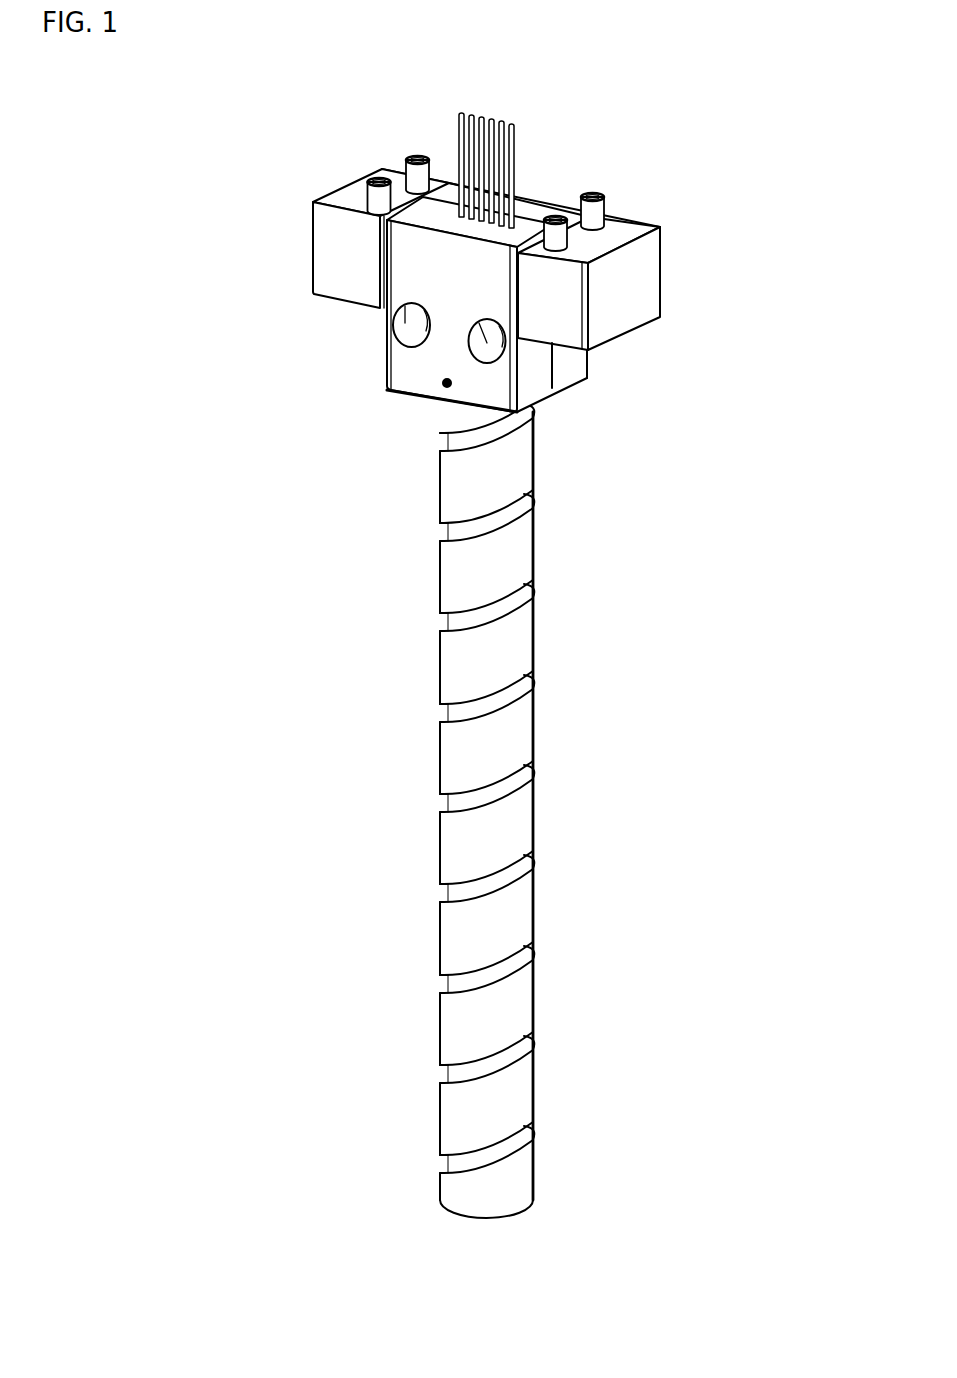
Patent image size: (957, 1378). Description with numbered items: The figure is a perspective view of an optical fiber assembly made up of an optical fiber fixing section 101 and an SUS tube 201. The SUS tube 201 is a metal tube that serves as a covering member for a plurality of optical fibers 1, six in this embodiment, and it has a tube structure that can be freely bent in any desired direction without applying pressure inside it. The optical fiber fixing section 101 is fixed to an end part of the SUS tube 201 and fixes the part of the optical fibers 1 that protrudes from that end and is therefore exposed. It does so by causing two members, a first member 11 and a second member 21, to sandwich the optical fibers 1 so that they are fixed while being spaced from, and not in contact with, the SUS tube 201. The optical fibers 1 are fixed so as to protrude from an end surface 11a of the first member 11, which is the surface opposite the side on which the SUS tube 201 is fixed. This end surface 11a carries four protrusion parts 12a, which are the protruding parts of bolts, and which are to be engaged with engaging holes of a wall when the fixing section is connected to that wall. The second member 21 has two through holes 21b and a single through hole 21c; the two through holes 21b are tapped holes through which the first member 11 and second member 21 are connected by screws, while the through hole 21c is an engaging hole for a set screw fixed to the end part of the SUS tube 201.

The optical fibers 1 is at (515, 140).
The first member 11 is at (662, 245).
The end surface 11a is at (330, 202).
The protrusion parts 12a is at (411, 174).
The second member 21 is at (385, 375).
The through holes 21b is at (405, 323).
The through hole 21c is at (444, 388).
The optical fiber fixing section 101 is at (708, 270).
The SUS tube 201 is at (548, 905).